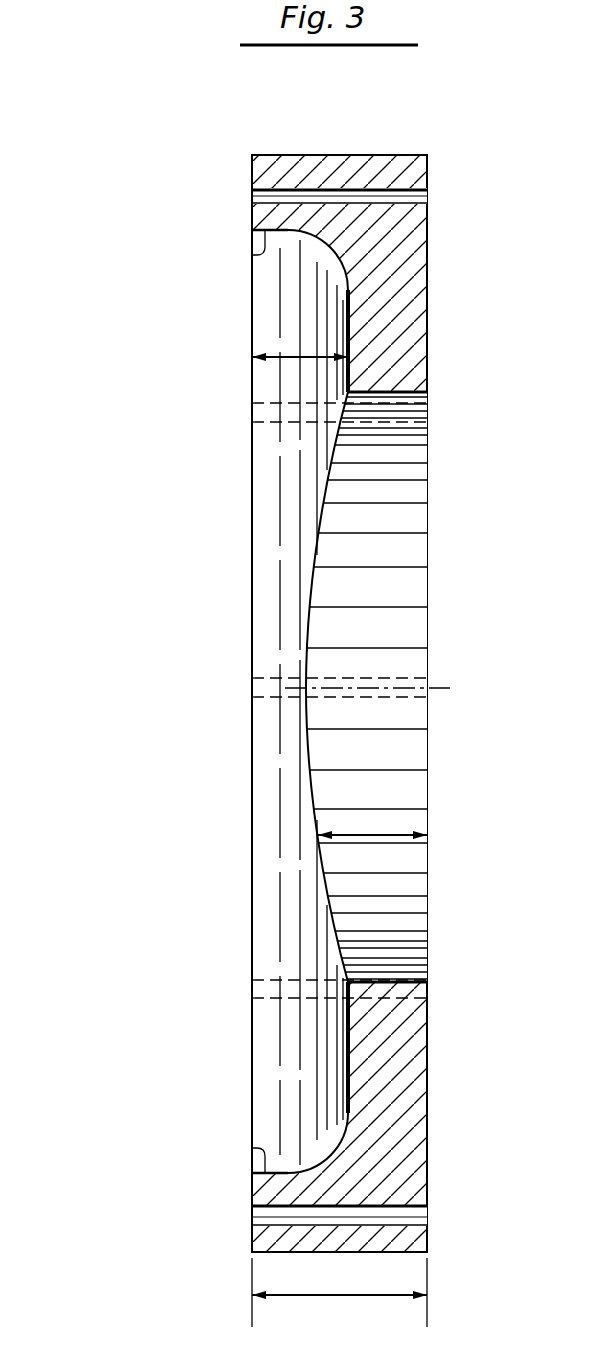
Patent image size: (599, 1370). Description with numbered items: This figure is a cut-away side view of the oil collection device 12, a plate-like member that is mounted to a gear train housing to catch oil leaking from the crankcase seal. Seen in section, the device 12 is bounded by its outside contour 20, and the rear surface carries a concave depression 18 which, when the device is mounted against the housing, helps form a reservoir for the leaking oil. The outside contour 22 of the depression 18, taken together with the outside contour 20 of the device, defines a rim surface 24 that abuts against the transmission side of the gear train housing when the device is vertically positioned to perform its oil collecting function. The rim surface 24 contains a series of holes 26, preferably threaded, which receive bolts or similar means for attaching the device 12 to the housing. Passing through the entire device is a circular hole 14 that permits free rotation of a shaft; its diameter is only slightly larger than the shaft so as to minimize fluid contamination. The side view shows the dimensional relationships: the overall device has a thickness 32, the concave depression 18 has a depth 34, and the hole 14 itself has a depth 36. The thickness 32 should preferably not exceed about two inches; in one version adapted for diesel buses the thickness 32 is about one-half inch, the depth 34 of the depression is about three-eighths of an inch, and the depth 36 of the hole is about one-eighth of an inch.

The oil collection device 12 is at (215, 419).
The circular hole 14 is at (393, 394).
The concave depression 18 is at (335, 260).
The outside contour 20 is at (335, 155).
The outside contour of depression 22 is at (262, 253).
The rim surface 24 is at (252, 172).
The holes 26 is at (262, 197).
The thickness 32 is at (350, 1295).
The depth of depression 34 is at (292, 357).
The depth of hole 36 is at (362, 834).